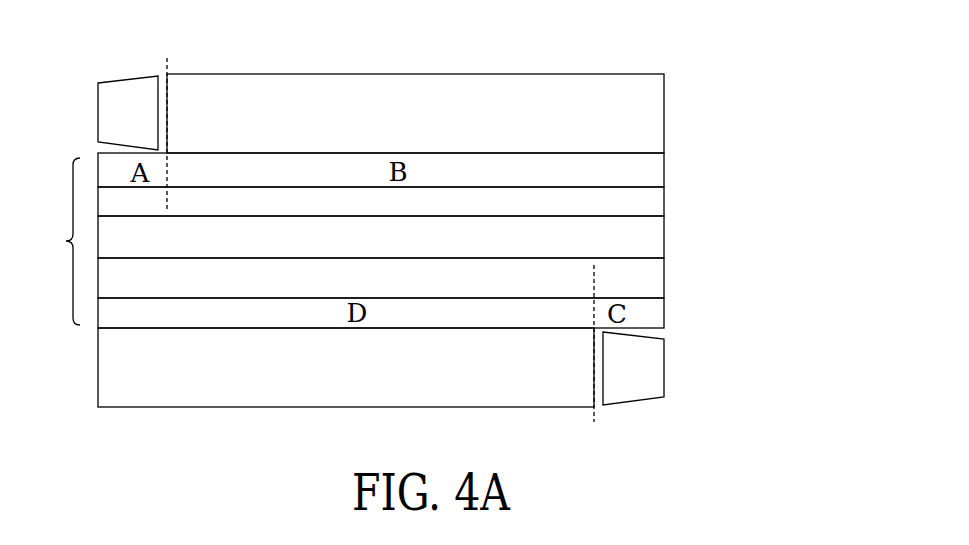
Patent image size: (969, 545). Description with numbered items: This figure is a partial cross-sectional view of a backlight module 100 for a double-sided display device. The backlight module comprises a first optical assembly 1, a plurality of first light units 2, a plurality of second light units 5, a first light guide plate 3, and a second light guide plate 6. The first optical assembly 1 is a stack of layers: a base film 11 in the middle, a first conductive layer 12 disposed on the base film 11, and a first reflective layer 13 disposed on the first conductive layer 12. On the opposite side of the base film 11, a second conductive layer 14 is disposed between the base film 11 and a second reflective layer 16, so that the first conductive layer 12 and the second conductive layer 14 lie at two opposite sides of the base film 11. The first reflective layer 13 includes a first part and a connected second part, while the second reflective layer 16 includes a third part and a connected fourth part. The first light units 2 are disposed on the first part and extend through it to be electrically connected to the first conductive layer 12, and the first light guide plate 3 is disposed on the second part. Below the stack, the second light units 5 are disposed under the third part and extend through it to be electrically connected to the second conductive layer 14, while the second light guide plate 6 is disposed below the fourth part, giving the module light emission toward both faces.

The display device 100 is at (783, 62).
The first optical assembly 1 is at (58, 241).
The first light units 2 is at (98, 115).
The first light guide plate 3 is at (664, 110).
The second light units 5 is at (664, 370).
The second light guide plate 6 is at (98, 370).
The base film 11 is at (664, 231).
The first conductive layer 12 is at (664, 201).
The first reflective layer 13 is at (664, 166).
The second conductive layer 14 is at (664, 271).
The second reflective layer 16 is at (664, 311).